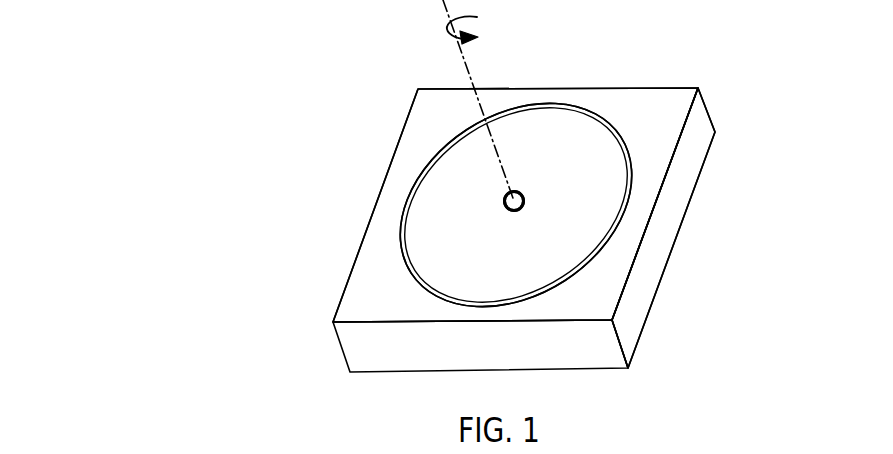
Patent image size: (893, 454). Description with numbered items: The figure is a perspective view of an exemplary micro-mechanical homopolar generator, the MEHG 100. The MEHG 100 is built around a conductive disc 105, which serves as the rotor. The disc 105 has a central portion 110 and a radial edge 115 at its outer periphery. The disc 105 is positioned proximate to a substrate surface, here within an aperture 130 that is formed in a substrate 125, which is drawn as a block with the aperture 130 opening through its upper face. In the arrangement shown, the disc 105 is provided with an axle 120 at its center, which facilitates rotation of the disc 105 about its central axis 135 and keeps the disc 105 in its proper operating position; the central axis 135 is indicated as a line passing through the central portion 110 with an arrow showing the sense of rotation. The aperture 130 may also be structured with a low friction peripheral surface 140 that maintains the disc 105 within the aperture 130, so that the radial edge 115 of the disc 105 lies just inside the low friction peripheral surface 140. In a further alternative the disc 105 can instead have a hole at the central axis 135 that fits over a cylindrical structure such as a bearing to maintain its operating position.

The MEHG 100 is at (240, 137).
The conductive disc 105 is at (600, 173).
The central portion 110 is at (532, 200).
The radial edge 115 is at (624, 207).
The axle 120 is at (532, 203).
The substrate 125 is at (667, 105).
The aperture 130 is at (402, 245).
The central axis 135 is at (480, 107).
The low friction peripheral surface 140 is at (432, 160).